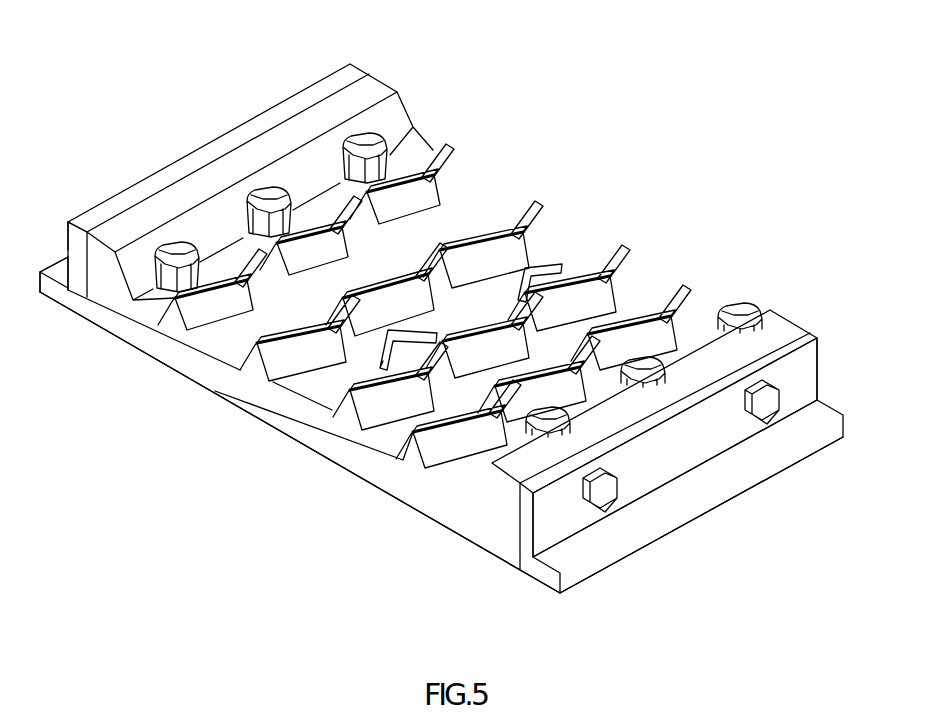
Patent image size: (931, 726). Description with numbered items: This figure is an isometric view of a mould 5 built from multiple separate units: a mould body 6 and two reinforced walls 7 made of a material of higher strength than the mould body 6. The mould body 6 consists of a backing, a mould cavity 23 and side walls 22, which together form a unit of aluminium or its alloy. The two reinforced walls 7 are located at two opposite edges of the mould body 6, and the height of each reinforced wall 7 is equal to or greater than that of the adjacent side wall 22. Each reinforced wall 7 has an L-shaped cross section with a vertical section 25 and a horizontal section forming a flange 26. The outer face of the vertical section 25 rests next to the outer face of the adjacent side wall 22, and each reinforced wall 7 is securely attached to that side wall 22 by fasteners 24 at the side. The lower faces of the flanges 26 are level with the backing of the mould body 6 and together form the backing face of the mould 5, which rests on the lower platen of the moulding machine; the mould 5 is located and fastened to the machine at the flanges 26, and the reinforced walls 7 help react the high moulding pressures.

The mould 5 is at (598, 147).
The mould body 6 is at (685, 217).
The reinforced wall 7 is at (162, 150).
The side wall 22 is at (100, 250).
The mould cavity 23 is at (587, 252).
The fastener 24 is at (770, 397).
The vertical section 25 is at (75, 240).
The flange 26 is at (60, 273).